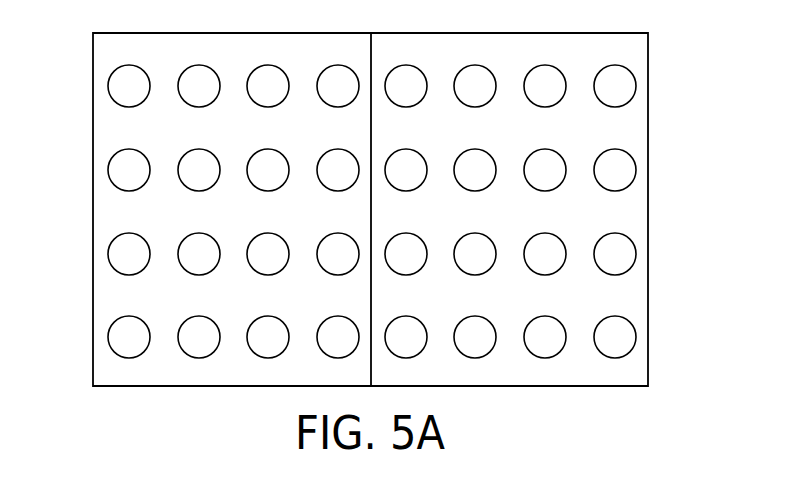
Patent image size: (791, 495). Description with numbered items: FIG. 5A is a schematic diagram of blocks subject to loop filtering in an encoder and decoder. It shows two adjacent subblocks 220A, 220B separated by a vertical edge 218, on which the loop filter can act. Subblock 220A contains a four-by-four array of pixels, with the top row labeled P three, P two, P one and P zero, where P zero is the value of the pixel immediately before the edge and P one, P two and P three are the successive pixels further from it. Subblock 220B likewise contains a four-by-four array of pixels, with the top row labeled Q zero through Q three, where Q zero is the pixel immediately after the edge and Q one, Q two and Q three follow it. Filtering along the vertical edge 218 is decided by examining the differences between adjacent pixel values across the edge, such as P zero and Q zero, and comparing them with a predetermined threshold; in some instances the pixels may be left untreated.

The subblock 220A is at (112, 33).
The vertical edge 218 is at (372, 33).
The subblock 220B is at (634, 33).